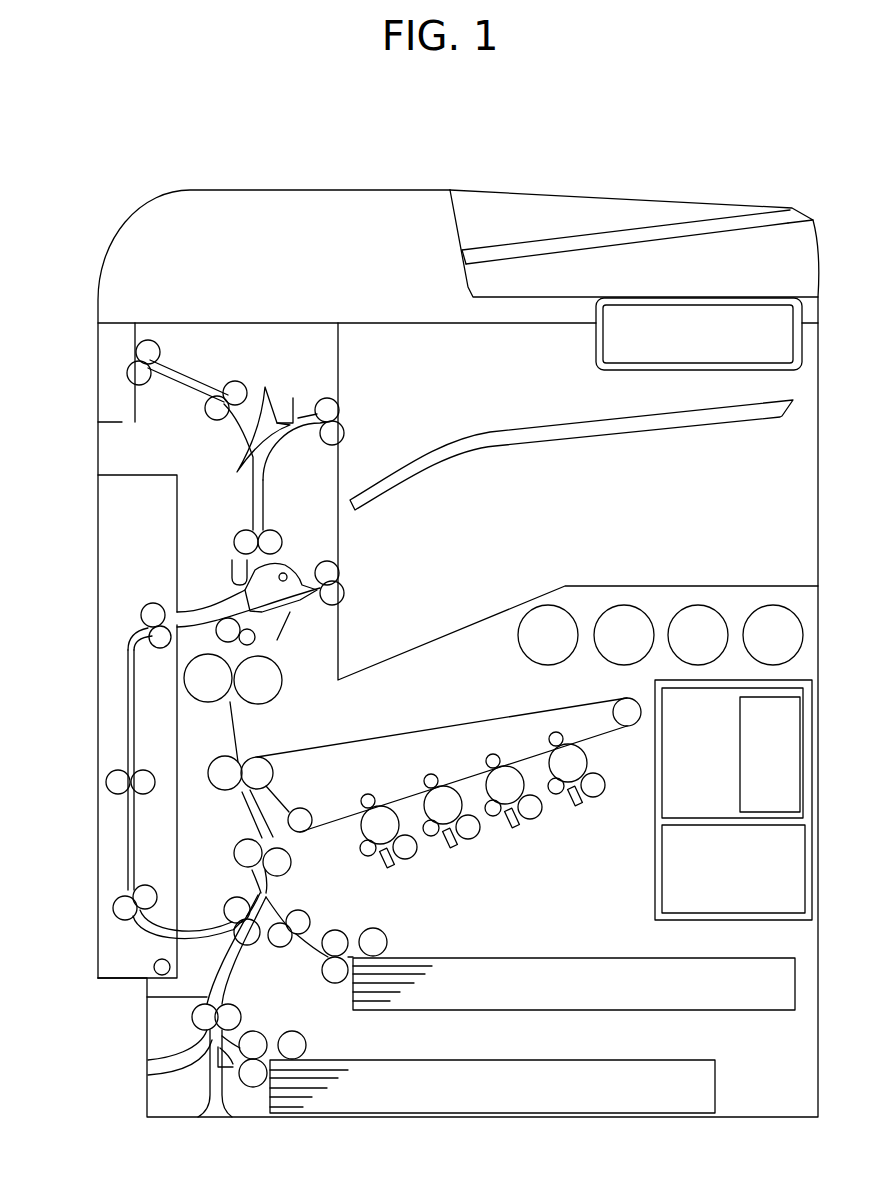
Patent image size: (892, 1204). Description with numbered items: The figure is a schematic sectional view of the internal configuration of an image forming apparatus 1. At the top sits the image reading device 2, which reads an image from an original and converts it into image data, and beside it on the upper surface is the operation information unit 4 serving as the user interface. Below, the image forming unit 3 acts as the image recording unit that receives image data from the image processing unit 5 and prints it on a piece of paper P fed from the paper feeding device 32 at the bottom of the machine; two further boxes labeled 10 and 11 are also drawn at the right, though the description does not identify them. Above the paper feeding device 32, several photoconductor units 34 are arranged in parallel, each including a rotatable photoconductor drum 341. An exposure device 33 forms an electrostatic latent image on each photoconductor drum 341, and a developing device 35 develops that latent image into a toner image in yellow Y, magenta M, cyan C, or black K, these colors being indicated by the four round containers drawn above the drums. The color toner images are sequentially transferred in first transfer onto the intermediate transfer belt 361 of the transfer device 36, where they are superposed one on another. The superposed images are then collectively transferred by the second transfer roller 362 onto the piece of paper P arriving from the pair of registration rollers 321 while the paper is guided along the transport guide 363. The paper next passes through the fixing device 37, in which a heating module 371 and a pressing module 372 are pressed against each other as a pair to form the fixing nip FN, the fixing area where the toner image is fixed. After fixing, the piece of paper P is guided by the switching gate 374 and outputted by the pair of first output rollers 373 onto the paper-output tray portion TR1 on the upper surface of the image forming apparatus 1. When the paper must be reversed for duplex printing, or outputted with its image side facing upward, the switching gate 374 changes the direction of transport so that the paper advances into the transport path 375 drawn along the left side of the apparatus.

The image forming apparatus 1 is at (112, 191).
The image reading device 2 is at (285, 274).
The image forming unit 3 is at (510, 887).
The operation information unit 4 is at (689, 351).
The image processing unit 5 is at (729, 884).
The controller 10 is at (676, 727).
The storage unit 11 is at (758, 769).
The paper feeding device 32 is at (393, 922).
The pair of registration rollers 321 is at (275, 862).
The exposure device 33 is at (576, 802).
The photoconductor unit 34 is at (546, 768).
The photoconductor drum 341 is at (568, 763).
The developing device 35 is at (603, 798).
The transfer device 36 is at (361, 725).
The intermediate transfer belt 361 is at (418, 728).
The second transfer roller 362 is at (227, 777).
The transport guide 363 is at (233, 727).
The fixing device 37 is at (293, 651).
The heating module 371 is at (263, 705).
The pressing module 372 is at (212, 703).
The pair of first output rollers 373 is at (344, 589).
The switching gate 374 is at (290, 576).
The transport path 375 is at (246, 505).
The fixing nip FN is at (233, 659).
The paper-output tray portion TR1 is at (508, 597).
The black K is at (540, 649).
The cyan C is at (616, 649).
The magenta M is at (688, 649).
The yellow Y is at (765, 649).
The piece of paper P is at (429, 1002).